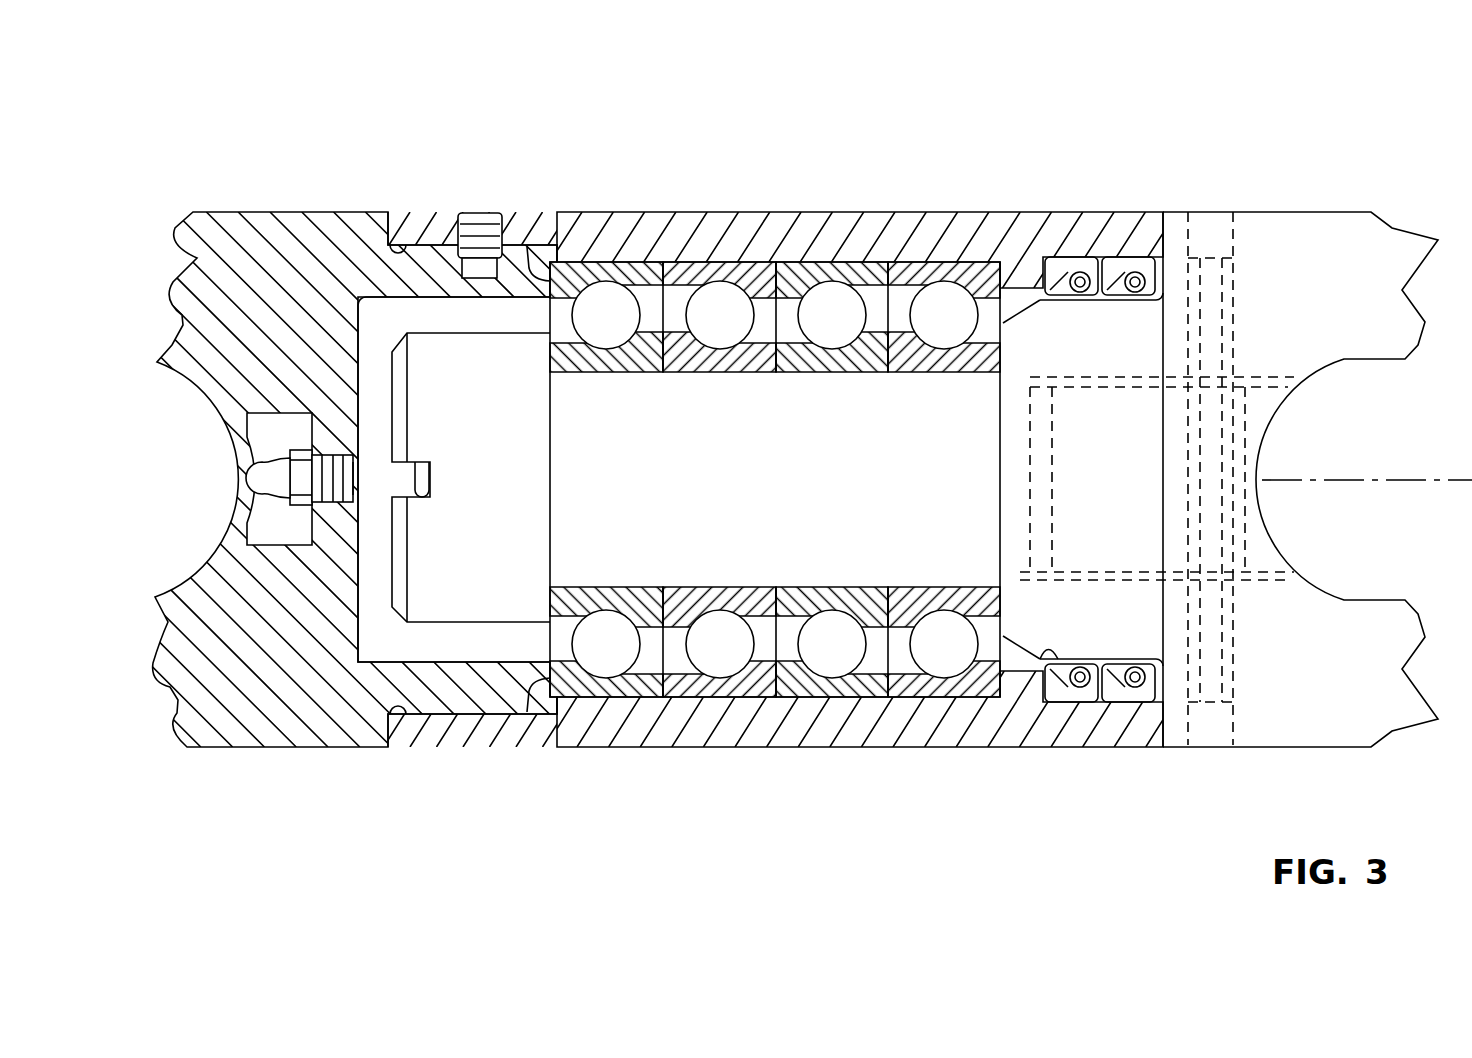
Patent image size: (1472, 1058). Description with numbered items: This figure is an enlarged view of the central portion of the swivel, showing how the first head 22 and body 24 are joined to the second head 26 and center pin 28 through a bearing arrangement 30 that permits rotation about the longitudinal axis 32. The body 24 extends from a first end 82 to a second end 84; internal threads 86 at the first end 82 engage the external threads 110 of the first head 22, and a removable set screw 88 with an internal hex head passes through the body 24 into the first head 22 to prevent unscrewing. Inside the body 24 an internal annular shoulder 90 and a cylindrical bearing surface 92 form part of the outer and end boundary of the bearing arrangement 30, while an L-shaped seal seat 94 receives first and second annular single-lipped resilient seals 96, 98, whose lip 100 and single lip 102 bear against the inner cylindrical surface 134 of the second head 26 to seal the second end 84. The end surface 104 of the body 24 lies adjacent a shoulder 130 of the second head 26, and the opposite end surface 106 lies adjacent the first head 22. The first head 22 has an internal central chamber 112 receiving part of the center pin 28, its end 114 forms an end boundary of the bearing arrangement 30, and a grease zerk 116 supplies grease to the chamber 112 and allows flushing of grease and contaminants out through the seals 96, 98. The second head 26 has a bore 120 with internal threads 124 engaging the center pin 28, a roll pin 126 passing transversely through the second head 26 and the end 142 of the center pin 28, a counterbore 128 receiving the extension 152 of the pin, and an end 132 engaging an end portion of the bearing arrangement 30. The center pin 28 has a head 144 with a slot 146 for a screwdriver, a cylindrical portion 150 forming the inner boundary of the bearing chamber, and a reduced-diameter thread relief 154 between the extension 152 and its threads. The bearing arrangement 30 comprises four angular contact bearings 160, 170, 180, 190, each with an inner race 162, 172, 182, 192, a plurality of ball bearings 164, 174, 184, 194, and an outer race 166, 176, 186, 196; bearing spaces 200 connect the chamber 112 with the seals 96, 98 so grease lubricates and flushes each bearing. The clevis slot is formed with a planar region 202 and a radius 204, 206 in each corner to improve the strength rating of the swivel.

The first head 22 is at (285, 212).
The body 24 is at (718, 212).
The second head 26 is at (1288, 212).
The center pin 28 is at (437, 622).
The bearing arrangement 30 is at (807, 258).
The longitudinal axis 32 is at (1443, 478).
The first end 82 is at (462, 747).
The second end 84 is at (1103, 743).
The internal threads 86 is at (490, 713).
The set screw 88 is at (481, 213).
The internal annular shoulder 90 is at (985, 607).
The cylindrical bearing surface 92 is at (732, 697).
The L-shaped seal seat 94 is at (1098, 697).
The first seal 96 is at (1060, 258).
The second seal 98 is at (1127, 258).
The lip 100 is at (1092, 258).
The single lip 102 is at (1158, 262).
The end surface 104 is at (1135, 740).
The end surface 106 is at (385, 716).
The external threads 110 is at (428, 240).
The internal central chamber 112 is at (372, 318).
The end 114 is at (530, 243).
The grease zerk 116 is at (252, 478).
The bore 120 is at (1263, 584).
The internal threads 124 is at (1262, 377).
The roll pin 126 is at (1236, 282).
The counterbore 128 is at (1022, 582).
The shoulder 130 is at (1163, 720).
The end 132 is at (990, 655).
The inner cylindrical surface 134 is at (1033, 655).
The end 142 is at (1254, 410).
The head 144 is at (487, 570).
The slot 146 is at (432, 482).
The cylindrical portion 150 is at (740, 493).
The extension 152 is at (1035, 370).
The thread relief 154 is at (1042, 392).
The angular contact bearing 160 is at (732, 583).
The inner race 162 is at (701, 373).
The ball bearings 164 is at (722, 325).
The outer race 166 is at (697, 262).
The angular contact bearing 170 is at (833, 583).
The inner race 172 is at (815, 373).
The ball bearings 174 is at (837, 325).
The outer race 176 is at (843, 262).
The angular contact bearing 180 is at (957, 583).
The inner race 182 is at (925, 373).
The ball bearings 184 is at (947, 325).
The outer race 186 is at (958, 262).
The angular contact bearing 190 is at (608, 583).
The inner race 192 is at (591, 373).
The ball bearings 194 is at (610, 327).
The outer race 196 is at (606, 262).
The bearing spaces 200 is at (647, 658).
The planar region 202 is at (246, 458).
The radius 204 is at (160, 372).
The radius 206 is at (185, 594).